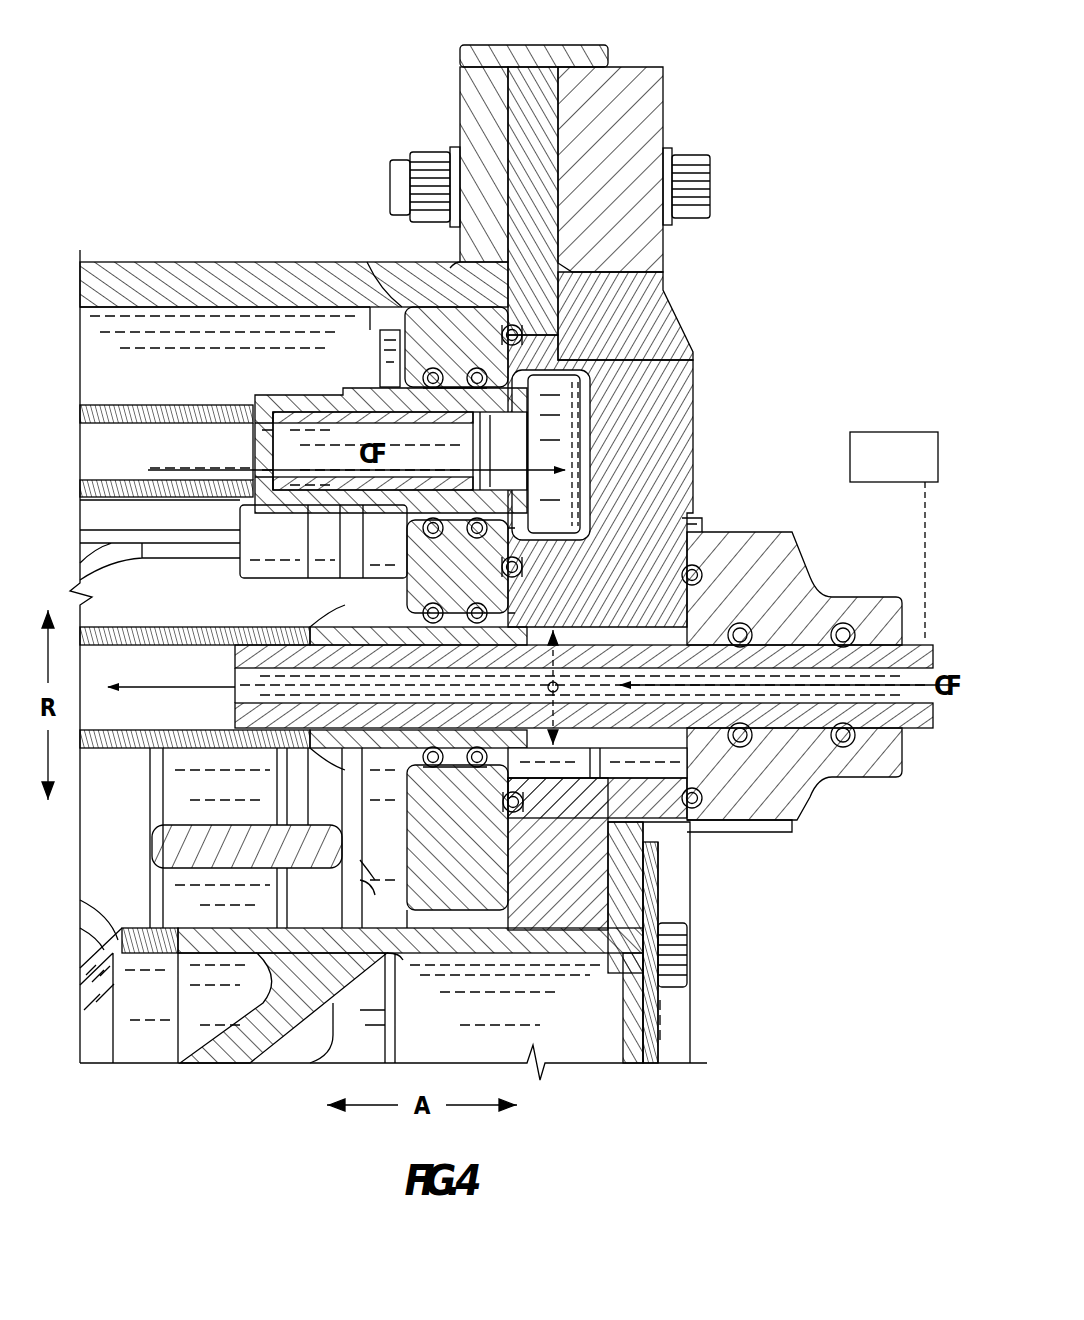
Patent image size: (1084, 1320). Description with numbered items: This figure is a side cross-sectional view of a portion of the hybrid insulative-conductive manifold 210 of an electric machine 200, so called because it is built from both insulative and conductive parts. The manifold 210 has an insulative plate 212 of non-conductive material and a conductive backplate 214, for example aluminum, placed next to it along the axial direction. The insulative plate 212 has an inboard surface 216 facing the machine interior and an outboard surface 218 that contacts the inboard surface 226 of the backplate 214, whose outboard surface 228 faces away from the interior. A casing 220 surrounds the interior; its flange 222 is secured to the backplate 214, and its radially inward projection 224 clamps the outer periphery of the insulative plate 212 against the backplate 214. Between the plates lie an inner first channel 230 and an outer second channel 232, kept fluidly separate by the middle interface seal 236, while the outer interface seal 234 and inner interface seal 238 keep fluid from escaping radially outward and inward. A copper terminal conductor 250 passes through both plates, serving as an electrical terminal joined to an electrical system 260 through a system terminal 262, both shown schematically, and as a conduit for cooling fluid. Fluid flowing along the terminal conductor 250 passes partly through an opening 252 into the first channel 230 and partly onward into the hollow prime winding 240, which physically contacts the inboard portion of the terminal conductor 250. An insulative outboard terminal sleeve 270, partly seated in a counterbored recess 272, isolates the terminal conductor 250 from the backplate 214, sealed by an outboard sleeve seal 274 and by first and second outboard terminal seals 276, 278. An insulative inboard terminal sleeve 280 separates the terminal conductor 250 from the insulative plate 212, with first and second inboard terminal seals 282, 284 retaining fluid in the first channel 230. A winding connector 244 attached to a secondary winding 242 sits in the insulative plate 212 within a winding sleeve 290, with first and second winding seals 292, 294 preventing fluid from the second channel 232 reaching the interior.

The electric machine 200 is at (172, 118).
The hybrid insulative-conductive manifold 210 is at (773, 167).
The insulative plate 212 is at (434, 579).
The backplate 214 is at (627, 476).
The inboard surface 216 is at (405, 790).
The outboard surface 218 is at (512, 888).
The casing 220 is at (212, 262).
The flange 222 is at (463, 100).
The projection 224 is at (375, 315).
The inboard surface 226 is at (507, 284).
The outboard surface 228 is at (697, 356).
The first channel 230 is at (566, 760).
The second channel 232 is at (563, 428).
The outer interface seal 234 is at (524, 333).
The middle interface seal 236 is at (524, 567).
The inner interface seal 238 is at (526, 804).
The prime winding 240 is at (265, 627).
The secondary winding 242 is at (125, 405).
The winding connector 244 is at (240, 393).
The terminal conductor 250 is at (912, 745).
The opening 252 is at (545, 687).
The electrical system 260 is at (876, 471).
The system terminal 262 is at (922, 535).
The outboard terminal sleeve 270 is at (778, 532).
The counterbored recess 272 is at (612, 750).
The outboard sleeve seal 274 is at (682, 573).
The first outboard terminal seal 276 is at (742, 623).
The second outboard terminal seal 278 is at (845, 623).
The inboard terminal sleeve 280 is at (355, 627).
The first inboard terminal seal 282 is at (433, 770).
The second inboard terminal seal 284 is at (477, 770).
The winding sleeve 290 is at (337, 393).
The first winding seal 292 is at (383, 318).
The second winding seal 294 is at (470, 366).